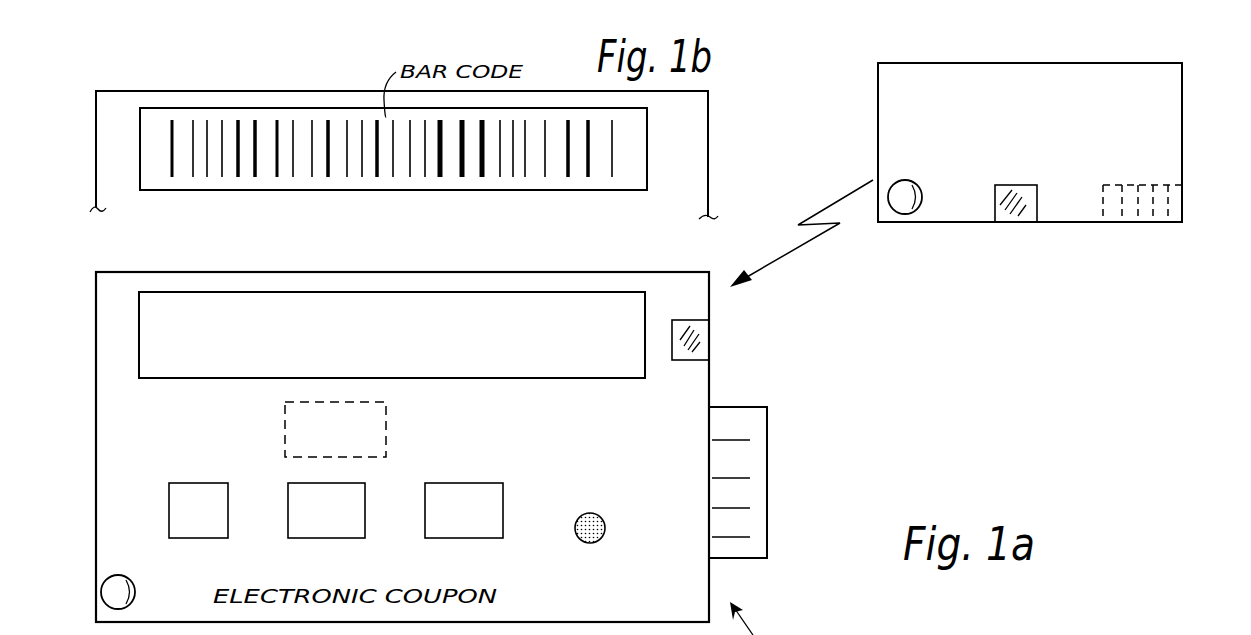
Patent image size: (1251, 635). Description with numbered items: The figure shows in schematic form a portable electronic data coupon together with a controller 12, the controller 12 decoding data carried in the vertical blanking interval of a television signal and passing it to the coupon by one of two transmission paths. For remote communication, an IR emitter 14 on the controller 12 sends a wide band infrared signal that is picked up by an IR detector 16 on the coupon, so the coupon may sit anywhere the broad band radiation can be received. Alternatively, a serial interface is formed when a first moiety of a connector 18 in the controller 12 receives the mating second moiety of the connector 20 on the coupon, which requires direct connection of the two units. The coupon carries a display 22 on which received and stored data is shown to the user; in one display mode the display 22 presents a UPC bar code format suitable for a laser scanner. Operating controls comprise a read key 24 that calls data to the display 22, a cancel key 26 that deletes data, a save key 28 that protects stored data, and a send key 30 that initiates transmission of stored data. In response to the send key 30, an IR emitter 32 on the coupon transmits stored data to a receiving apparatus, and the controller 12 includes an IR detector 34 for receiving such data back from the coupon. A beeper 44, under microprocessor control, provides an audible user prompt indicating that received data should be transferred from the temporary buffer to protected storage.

In FIG. 1A, the controller 12 is at (1183, 149).
In FIG. 1A, the IR emitter 14 is at (906, 215).
In FIG. 1A, the IR detector 16 is at (688, 320).
In FIG. 1A, the first moiety of a connector 18 is at (1183, 195).
In FIG. 1A, the second moiety of the connector 20 is at (735, 407).
In FIG. 1B, the display 22 is at (286, 66).
In FIG. 1A, the display 22 is at (215, 380).
In FIG. 1A, the read key 24 is at (180, 483).
In FIG. 1A, the cancel key 26 is at (310, 538).
In FIG. 1A, the save key 28 is at (478, 483).
In FIG. 1A, the send key 30 is at (387, 428).
In FIG. 1A, the IR emitter 32 is at (101, 595).
In FIG. 1A, the IR detector 34 is at (1017, 222).
In FIG. 1A, the beeper 44 is at (606, 526).